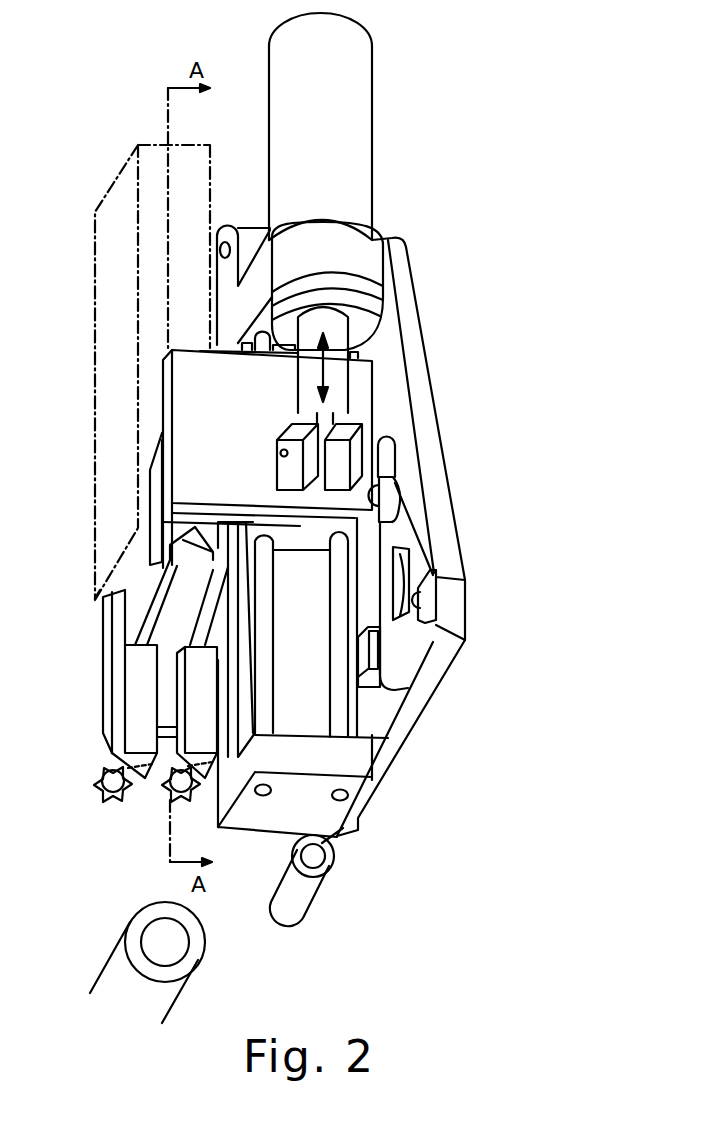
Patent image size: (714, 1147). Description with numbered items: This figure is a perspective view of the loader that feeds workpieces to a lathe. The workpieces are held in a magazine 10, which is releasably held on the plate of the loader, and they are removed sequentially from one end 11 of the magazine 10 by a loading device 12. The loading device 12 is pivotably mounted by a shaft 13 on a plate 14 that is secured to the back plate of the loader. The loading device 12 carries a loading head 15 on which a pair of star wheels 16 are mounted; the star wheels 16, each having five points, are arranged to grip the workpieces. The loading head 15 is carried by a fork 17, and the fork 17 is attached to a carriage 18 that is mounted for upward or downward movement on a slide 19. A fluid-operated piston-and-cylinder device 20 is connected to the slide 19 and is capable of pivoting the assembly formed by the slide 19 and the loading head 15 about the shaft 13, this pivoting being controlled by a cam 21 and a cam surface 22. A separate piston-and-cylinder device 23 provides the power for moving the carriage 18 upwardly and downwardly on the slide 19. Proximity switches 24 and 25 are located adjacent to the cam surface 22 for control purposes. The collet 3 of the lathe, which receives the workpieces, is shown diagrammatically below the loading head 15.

The collet 3 is at (115, 962).
The magazine 10 is at (103, 253).
The end of the magazine 11 is at (124, 571).
The loading device 12 is at (384, 178).
The shaft 13 is at (230, 228).
The plate 14 is at (421, 362).
The loading head 15 is at (112, 630).
The star wheels 16 is at (160, 800).
The fork 17 is at (150, 485).
The carriage 18 is at (180, 372).
The slide 19 is at (340, 723).
The fluid-operated piston-and-cylinder device 20 is at (302, 898).
The cam 21 is at (392, 487).
The cam surface 22 is at (410, 528).
The piston-and-cylinder device 23 is at (365, 50).
The proximity switch 24 is at (385, 690).
The proximity switch 25 is at (423, 597).